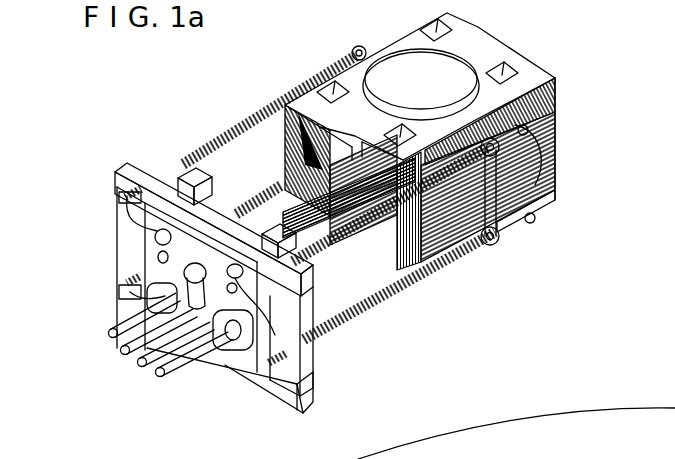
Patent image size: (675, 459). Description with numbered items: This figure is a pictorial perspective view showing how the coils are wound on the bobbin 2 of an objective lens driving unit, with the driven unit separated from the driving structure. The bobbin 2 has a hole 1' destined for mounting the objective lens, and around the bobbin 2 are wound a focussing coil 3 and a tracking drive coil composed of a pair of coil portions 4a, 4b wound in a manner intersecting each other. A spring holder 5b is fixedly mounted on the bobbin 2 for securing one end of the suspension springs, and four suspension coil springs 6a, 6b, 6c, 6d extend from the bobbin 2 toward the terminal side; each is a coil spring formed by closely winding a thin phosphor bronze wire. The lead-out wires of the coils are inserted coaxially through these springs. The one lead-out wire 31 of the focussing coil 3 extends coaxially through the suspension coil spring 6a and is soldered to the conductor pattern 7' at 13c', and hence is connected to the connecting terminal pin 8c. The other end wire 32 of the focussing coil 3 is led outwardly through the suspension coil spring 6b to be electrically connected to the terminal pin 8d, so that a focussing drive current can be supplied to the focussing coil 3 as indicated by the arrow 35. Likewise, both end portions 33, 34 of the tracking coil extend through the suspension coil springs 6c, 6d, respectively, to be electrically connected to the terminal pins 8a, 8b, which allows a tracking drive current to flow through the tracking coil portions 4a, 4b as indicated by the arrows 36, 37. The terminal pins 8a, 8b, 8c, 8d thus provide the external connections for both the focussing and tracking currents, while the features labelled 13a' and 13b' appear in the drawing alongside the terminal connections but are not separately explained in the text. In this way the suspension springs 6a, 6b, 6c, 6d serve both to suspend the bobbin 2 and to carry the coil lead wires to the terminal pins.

The hole 1' is at (421, 60).
The bobbin 2 is at (512, 45).
The focussing coil 3 is at (548, 128).
The tracking coil portion 4a is at (532, 86).
The tracking coil portion 4b is at (397, 280).
The spring holder 5b is at (352, 52).
The suspension coil spring 6a is at (430, 270).
The suspension coil spring 6b is at (467, 255).
The suspension coil spring 6c is at (203, 157).
The suspension coil spring 6d is at (226, 137).
The conductor pattern 7' is at (214, 215).
The terminal pin 8a is at (99, 321).
The terminal pin 8b is at (117, 339).
The terminal pin 8c is at (135, 355).
The terminal pin 8d is at (162, 371).
The terminal hole 13a' is at (120, 243).
The terminal hole 13b' is at (116, 265).
The solder point 13c' is at (299, 394).
The lead-out wire 31 is at (530, 163).
The end wire 32 is at (503, 227).
The end portion of tracking coil 33 is at (123, 220).
The end portion of tracking coil 34 is at (123, 301).
The arrow 35 is at (280, 177).
The arrow 36 is at (288, 145).
The arrow 37 is at (360, 312).